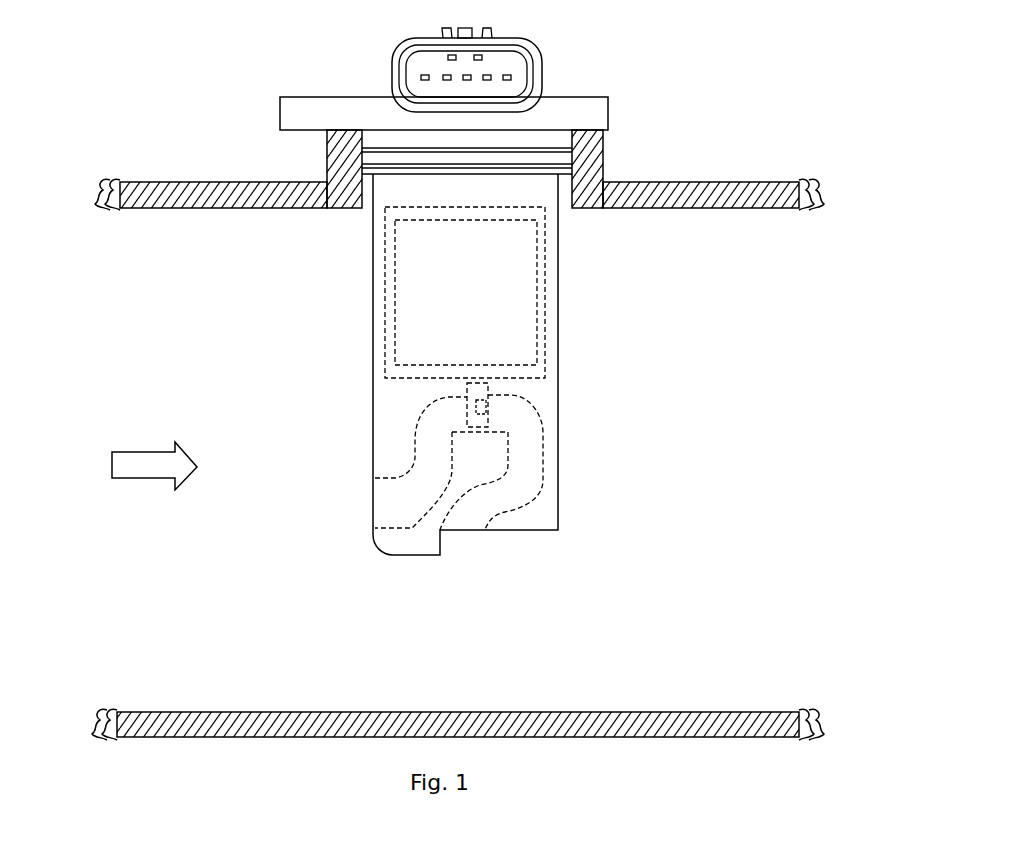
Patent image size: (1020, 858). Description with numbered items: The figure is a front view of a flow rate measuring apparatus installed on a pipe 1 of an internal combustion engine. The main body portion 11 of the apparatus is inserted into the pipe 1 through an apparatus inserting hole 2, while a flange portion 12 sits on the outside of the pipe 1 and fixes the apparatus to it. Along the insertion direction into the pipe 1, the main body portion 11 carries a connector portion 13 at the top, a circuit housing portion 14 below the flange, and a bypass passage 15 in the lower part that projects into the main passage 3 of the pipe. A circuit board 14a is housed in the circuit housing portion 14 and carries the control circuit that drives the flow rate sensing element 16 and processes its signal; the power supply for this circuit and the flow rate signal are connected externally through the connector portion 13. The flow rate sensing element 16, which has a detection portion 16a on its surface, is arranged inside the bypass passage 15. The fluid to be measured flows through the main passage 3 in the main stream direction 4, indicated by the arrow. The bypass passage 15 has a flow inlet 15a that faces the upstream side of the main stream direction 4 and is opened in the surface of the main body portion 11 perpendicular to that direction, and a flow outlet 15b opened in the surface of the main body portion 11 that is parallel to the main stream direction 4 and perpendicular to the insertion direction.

The pipe 1 is at (424, 419).
The apparatus inserting hole 2 is at (327, 180).
The main passage 3 is at (132, 236).
The main stream direction 4 is at (145, 450).
The main body portion 11 is at (560, 292).
The flange portion 12 is at (591, 97).
The connector portion 13 is at (392, 62).
The circuit housing portion 14 is at (385, 264).
The circuit board 14a is at (395, 308).
The bypass passage 15 is at (428, 470).
The flow inlet 15a is at (372, 512).
The flow outlet 15b is at (470, 532).
The flow rate sensing element 16 is at (467, 392).
The detection portion 16a is at (486, 410).